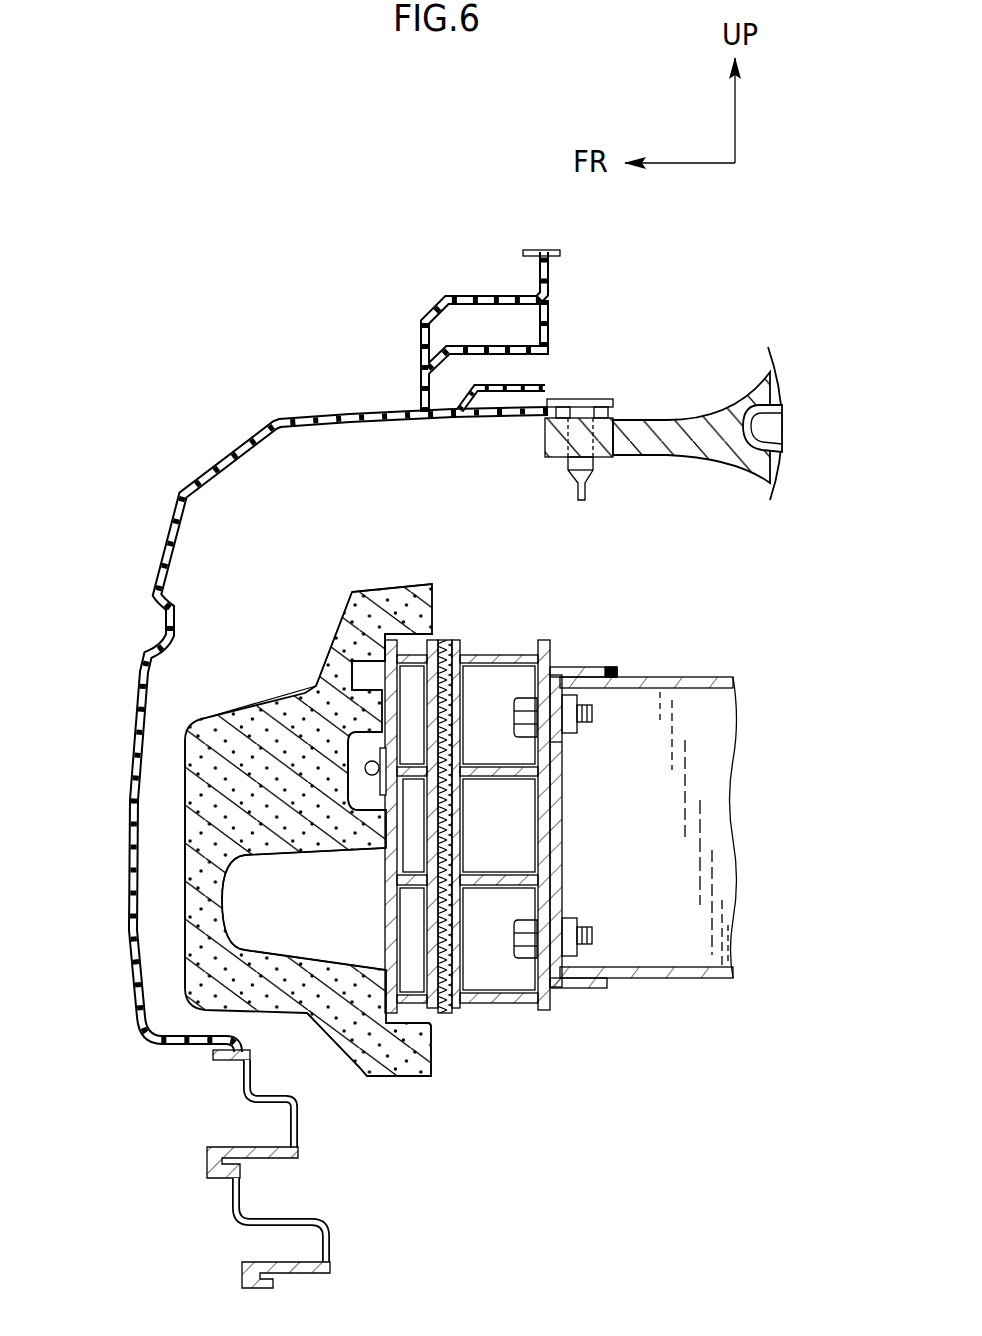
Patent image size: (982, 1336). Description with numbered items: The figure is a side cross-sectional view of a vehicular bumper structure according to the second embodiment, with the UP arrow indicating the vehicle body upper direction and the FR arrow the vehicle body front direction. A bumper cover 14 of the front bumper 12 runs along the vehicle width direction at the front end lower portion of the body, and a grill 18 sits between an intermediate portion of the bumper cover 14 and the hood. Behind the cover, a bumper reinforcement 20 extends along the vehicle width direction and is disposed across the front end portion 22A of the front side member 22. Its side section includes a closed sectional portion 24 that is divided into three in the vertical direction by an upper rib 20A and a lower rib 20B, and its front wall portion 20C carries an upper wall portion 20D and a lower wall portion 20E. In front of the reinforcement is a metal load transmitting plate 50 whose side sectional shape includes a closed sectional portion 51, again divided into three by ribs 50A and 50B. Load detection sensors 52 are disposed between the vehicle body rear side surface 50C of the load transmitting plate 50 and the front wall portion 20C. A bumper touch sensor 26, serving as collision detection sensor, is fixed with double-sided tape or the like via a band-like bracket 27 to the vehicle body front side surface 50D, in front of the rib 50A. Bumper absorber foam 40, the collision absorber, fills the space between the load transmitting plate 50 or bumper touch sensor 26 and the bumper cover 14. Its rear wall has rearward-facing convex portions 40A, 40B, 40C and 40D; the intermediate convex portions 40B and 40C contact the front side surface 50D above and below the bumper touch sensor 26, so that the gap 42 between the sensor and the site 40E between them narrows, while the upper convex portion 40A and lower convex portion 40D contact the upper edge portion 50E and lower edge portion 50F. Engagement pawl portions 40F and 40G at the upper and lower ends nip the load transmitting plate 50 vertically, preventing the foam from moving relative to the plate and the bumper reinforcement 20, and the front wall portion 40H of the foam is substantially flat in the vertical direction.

The front bumper 12 is at (182, 465).
The bumper cover 14 is at (138, 675).
The grill 18 is at (497, 295).
The bumper reinforcement 20 is at (519, 811).
The upper rib 20A is at (560, 745).
The lower rib 20B is at (487, 875).
The front wall portion 20C is at (442, 1013).
The upper wall portion 20D is at (505, 655).
The lower wall portion 20E is at (520, 1003).
The front side member 22 is at (649, 783).
The front end portion 22A is at (563, 835).
The closed sectional portion 24 is at (523, 757).
The bumper touch sensor 26 is at (312, 693).
The band-like bracket 27 is at (372, 700).
The bumper absorber foam 40 is at (286, 811).
The upper convex portion 40A is at (340, 620).
The convex portion 40B is at (322, 655).
The convex portion 40C is at (367, 790).
The lower convex portion 40D is at (378, 1070).
The site between convex portions 40E is at (340, 785).
The engagement pawl portion 40F is at (420, 590).
The engagement pawl portion 40G is at (433, 1050).
The front wall portion 40H is at (185, 902).
The gap 42 is at (327, 911).
The load transmitting plate 50 is at (397, 757).
The rib 50A is at (448, 682).
The rib 50B is at (410, 932).
The vehicle body rear side surface 50C is at (410, 812).
The vehicle body front side surface 50D is at (387, 940).
The upper edge portion 50E is at (386, 627).
The lower edge portion 50F is at (425, 1075).
The closed sectional portion 51 is at (415, 750).
The load detection sensor 52 is at (417, 647).